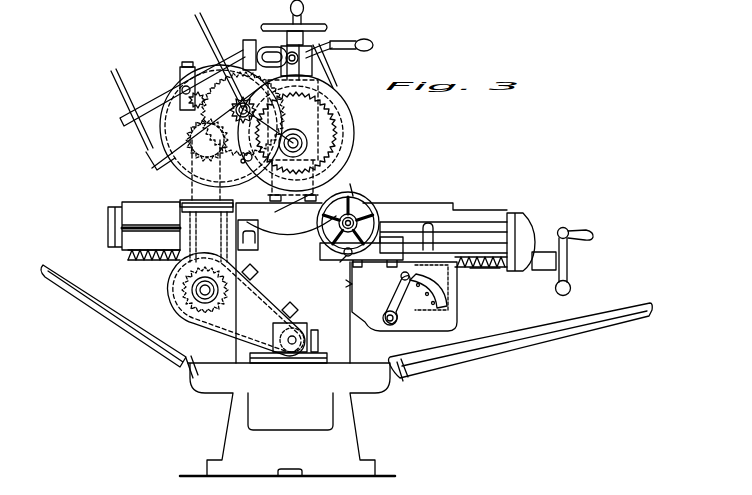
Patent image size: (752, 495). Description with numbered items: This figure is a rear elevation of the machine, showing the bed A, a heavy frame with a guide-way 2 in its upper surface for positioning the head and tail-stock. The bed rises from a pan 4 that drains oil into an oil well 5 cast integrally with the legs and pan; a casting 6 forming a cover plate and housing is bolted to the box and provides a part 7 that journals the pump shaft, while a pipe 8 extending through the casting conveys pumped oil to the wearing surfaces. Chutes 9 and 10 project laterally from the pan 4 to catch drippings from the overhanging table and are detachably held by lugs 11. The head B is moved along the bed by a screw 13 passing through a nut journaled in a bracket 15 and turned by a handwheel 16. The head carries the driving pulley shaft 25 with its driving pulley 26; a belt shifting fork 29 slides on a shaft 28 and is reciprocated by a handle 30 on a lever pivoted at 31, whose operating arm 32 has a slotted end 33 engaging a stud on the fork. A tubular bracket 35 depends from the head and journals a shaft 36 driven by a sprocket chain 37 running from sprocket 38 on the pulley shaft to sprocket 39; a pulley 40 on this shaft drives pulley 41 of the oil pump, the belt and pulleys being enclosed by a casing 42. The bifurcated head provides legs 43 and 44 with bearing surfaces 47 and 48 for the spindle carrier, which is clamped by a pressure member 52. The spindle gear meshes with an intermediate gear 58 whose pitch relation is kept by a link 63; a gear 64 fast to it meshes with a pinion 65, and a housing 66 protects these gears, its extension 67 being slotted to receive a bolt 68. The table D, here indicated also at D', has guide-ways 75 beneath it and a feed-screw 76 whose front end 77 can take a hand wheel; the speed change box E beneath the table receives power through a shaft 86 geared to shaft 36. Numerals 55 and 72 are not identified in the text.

The guide-way 2 is at (256, 246).
The pan 4 is at (165, 188).
The oil well 5 is at (287, 419).
The casting 6 is at (327, 358).
The part 7 is at (306, 327).
The pipe 8 is at (318, 340).
The chute 9 is at (136, 320).
The chute 10 is at (518, 337).
The lug 11 is at (293, 376).
The screw 13 is at (372, 221).
The bracket 15 is at (334, 265).
The handwheel 16 is at (362, 208).
The driving pulley shaft 25 is at (206, 137).
The driving pulley 26 is at (157, 146).
The shaft 28 is at (181, 91).
The belt shifting fork 29 is at (165, 104).
The handle 30 is at (366, 38).
The pivot 31 is at (244, 38).
The operating arm 32 is at (243, 47).
The slotted end 33 is at (182, 66).
The tubular bracket 35 is at (250, 243).
The shaft 36 is at (205, 292).
The sprocket chain 37 is at (207, 232).
The sprocket 38 is at (206, 173).
The sprocket 39 is at (205, 281).
The pulley 40 is at (230, 304).
The pulley 41 is at (277, 336).
The casing 42 is at (224, 335).
The leg 43 is at (279, 48).
The leg 44 is at (331, 67).
The bearing surface 47 is at (291, 223).
The bearing surface 48 is at (300, 207).
The pressure member 52 is at (339, 91).
The pinion 55 is at (243, 118).
The intermediate gear 58 is at (243, 114).
The link 63 is at (293, 140).
The gear 64 is at (257, 57).
The pinion 65 is at (240, 158).
The housing 66 is at (296, 128).
The extension 67 is at (331, 43).
The bolt 68 is at (296, 61).
The hand wheel 72 is at (305, 27).
The guide-way 75 is at (168, 238).
The feed-screw 76 is at (485, 274).
The front end 77 is at (554, 268).
The shaft 86 is at (341, 287).
The bed A is at (350, 343).
The head B is at (355, 184).
The table D is at (516, 227).
The guide D' is at (435, 198).
The speed change box E is at (404, 296).